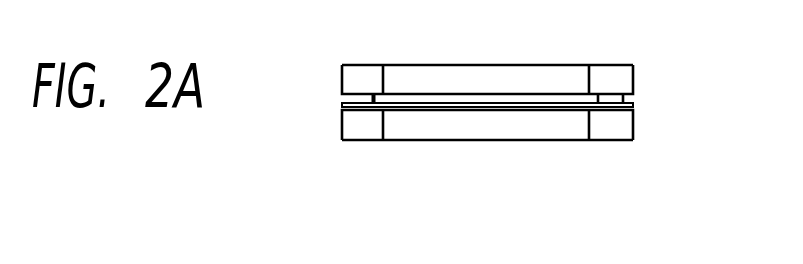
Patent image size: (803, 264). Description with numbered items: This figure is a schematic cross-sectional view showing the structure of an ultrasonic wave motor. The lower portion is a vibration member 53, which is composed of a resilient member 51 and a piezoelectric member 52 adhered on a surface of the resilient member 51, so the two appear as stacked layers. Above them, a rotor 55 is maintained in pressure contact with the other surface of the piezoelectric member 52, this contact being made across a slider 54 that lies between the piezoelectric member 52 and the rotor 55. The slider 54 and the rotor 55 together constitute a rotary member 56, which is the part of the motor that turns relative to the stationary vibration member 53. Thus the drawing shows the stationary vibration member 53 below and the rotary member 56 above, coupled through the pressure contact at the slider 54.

The resilient member 51 is at (633, 134).
The piezoelectric member 52 is at (634, 106).
The vibration member 53 is at (480, 141).
The slider 54 is at (345, 103).
The rotor 55 is at (345, 77).
The rotary member 56 is at (512, 64).